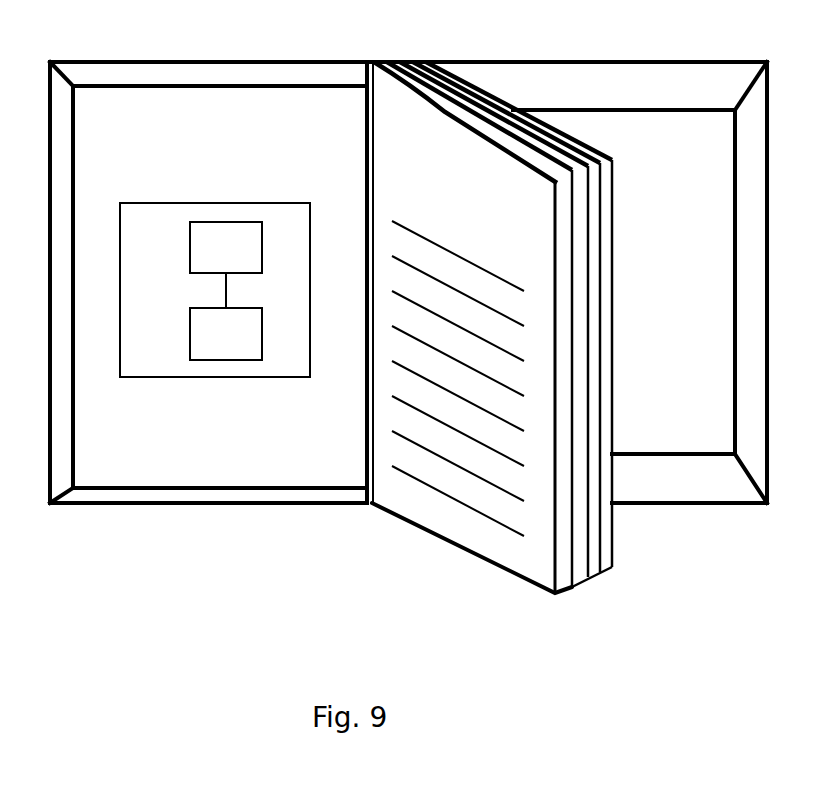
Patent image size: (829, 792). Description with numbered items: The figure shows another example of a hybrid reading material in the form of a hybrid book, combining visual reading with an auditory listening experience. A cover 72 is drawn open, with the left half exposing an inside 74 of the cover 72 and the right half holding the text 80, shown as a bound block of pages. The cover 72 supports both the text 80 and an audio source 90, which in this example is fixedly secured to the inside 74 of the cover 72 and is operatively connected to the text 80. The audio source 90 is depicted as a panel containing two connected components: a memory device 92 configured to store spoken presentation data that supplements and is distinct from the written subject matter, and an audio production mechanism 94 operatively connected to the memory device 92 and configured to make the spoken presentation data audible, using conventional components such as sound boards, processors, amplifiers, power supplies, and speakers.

The cover 72 is at (222, 58).
The inside of cover 74 is at (108, 152).
The text 80 is at (437, 200).
The audio source 90 is at (157, 203).
The memory device 92 is at (190, 257).
The audio production mechanism 94 is at (190, 343).